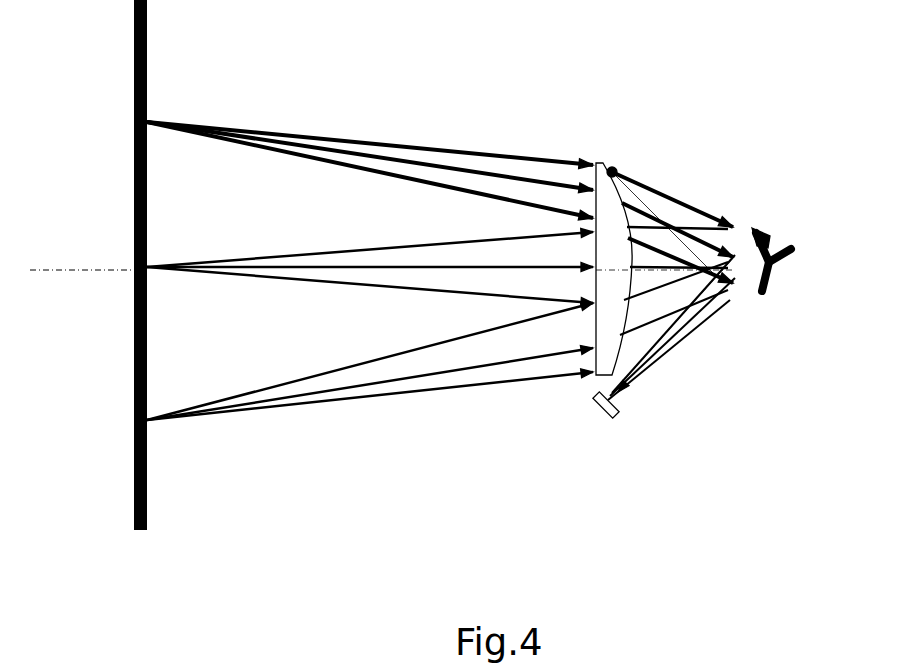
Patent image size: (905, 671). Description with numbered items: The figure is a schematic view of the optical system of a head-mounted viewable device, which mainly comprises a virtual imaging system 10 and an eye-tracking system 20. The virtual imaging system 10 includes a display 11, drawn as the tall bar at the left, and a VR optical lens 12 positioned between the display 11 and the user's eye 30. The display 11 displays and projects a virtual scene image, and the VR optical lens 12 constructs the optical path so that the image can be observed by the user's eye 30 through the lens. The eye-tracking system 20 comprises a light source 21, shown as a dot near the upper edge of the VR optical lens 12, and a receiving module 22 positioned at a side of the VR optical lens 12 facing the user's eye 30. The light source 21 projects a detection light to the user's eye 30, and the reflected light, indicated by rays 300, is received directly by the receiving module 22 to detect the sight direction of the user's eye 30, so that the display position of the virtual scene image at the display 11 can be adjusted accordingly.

The virtual imaging system 10 is at (595, 60).
The display 11 is at (140, 58).
The eye-tracking system 20 is at (698, 102).
The VR optical lens 12 is at (603, 158).
The light source 21 is at (617, 169).
The receiving module 22 is at (616, 418).
The user's eye 30 is at (775, 246).
The returning light rays 300 is at (683, 345).